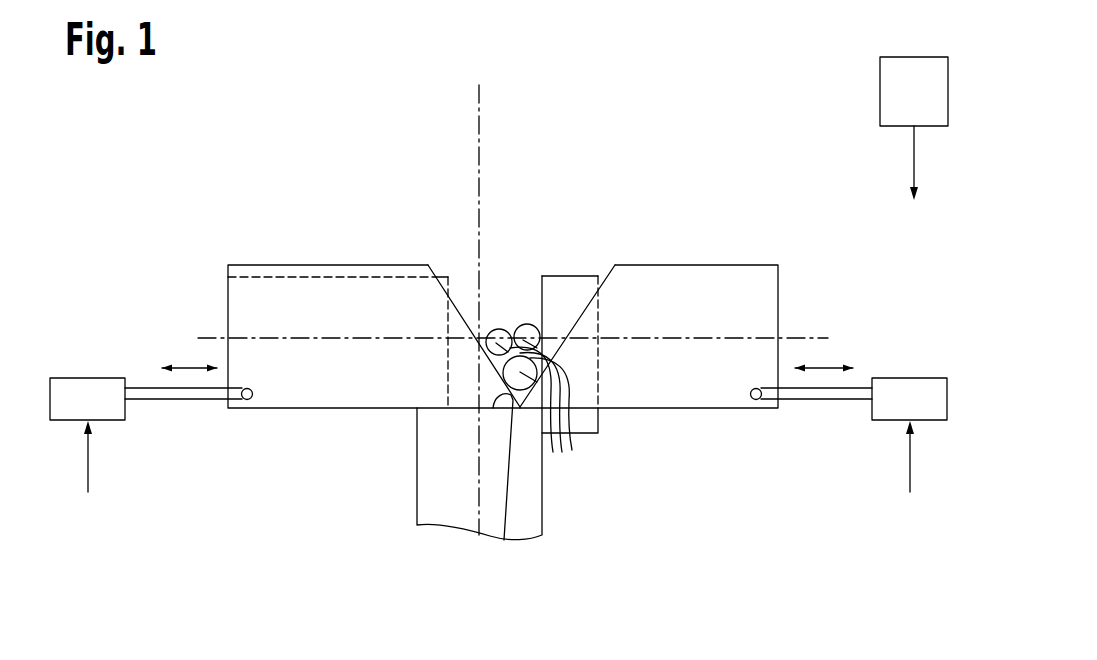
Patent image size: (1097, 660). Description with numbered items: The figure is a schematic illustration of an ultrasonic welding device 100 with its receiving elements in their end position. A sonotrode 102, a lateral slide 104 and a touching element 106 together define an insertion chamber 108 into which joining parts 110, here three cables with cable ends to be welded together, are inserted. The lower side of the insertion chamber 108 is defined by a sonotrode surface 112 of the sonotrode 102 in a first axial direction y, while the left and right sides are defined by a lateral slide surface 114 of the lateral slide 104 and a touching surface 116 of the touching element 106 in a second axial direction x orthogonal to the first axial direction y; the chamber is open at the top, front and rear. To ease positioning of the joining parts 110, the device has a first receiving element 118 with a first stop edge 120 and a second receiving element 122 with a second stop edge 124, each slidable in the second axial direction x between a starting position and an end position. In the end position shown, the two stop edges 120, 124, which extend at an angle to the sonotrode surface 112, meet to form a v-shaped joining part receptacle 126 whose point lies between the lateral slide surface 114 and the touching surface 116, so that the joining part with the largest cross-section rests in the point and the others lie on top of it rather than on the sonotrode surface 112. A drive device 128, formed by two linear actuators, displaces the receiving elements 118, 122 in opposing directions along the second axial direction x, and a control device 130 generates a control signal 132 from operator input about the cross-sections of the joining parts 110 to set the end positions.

The ultrasonic welding device 100 is at (138, 203).
The sonotrode 102 is at (435, 490).
The lateral slide 104 is at (355, 276).
The touching element 106 is at (593, 418).
The insertion chamber 108 is at (490, 287).
The joining parts 110 is at (555, 418).
The sonotrode surface 112 is at (504, 540).
The lateral slide surface 114 is at (449, 309).
The touching surface 116 is at (541, 280).
The first receiving element 118 is at (282, 265).
The first stop edge 120 is at (438, 277).
The second receiving element 122 is at (705, 277).
The second stop edge 124 is at (606, 281).
The v-shaped joining part receptacle 126 is at (462, 358).
The drive device 128 is at (90, 377).
The control device 130 is at (880, 92).
The control signal 132 is at (88, 463).
The second axial direction x is at (818, 336).
The first axial direction y is at (478, 97).